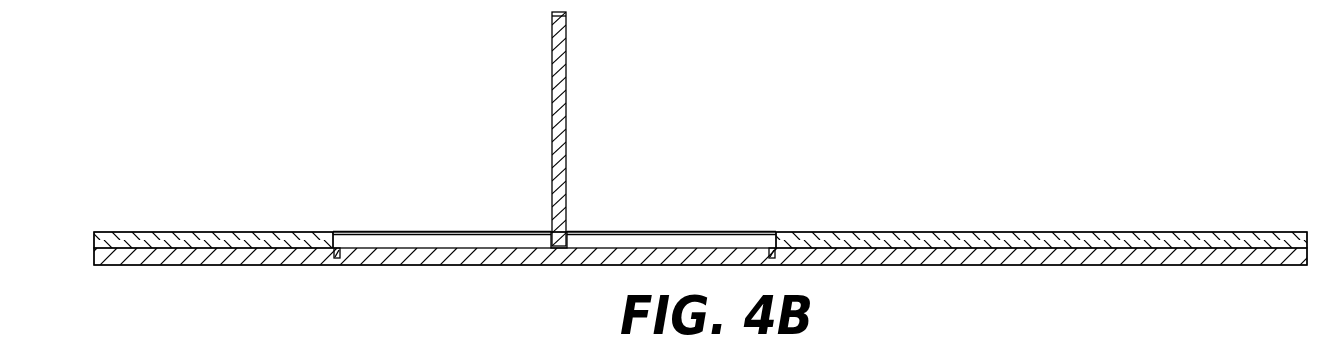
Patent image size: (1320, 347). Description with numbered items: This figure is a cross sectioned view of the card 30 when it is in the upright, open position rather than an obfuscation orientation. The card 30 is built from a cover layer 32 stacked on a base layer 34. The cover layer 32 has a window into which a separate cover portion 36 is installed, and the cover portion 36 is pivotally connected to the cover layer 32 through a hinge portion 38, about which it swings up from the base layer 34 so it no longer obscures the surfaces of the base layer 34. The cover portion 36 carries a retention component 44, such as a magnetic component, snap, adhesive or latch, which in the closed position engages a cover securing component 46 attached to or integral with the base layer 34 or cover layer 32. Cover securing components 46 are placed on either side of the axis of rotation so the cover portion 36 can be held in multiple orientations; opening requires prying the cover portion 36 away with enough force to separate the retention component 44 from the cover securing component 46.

The card 30 is at (1160, 204).
The cover layer 32 is at (991, 240).
The base layer 34 is at (940, 259).
The cover portion 36 is at (557, 128).
The hinge portion 38 is at (556, 244).
The retention component 44 is at (556, 17).
The cover securing component 46 is at (863, 292).